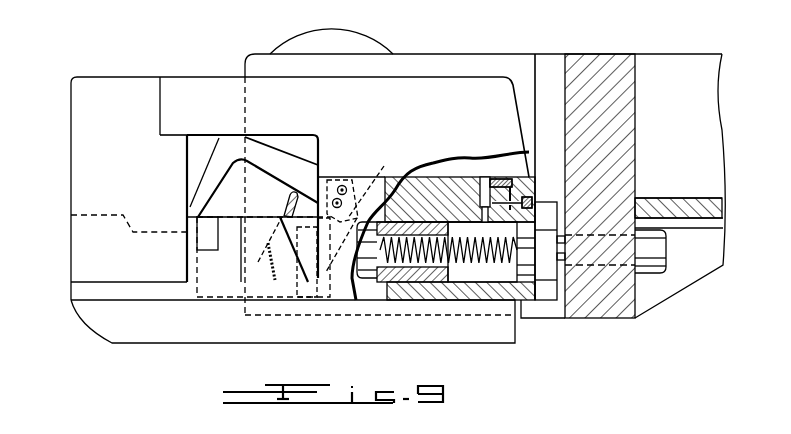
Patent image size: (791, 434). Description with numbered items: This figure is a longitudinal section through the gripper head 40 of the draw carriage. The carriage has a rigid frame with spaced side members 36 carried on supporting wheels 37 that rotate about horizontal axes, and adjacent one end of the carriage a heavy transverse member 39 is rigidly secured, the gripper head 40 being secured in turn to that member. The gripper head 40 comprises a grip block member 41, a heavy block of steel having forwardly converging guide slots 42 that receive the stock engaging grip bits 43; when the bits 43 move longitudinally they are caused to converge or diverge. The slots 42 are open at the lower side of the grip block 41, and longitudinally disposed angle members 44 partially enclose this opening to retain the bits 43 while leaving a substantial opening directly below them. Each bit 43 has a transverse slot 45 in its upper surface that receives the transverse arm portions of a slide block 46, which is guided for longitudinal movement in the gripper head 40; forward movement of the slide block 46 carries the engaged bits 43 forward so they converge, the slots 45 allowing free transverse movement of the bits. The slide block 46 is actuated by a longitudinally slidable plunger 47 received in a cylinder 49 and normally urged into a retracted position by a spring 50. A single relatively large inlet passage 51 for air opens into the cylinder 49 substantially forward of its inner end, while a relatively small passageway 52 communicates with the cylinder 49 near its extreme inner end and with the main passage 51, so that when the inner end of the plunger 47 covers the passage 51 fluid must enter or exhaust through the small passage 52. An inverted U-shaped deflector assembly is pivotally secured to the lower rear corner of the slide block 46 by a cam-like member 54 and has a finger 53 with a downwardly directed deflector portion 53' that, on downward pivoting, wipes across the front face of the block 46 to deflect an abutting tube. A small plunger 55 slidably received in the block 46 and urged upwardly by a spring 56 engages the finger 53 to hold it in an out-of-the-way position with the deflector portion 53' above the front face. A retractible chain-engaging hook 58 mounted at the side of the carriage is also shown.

The side member 36 is at (685, 58).
The supporting wheel 37 is at (357, 40).
The transverse member 39 is at (626, 119).
The gripper head 40 is at (398, 128).
The grip block member 41 is at (87, 157).
The guide slot 42 is at (87, 213).
The grip bit 43 is at (217, 272).
The angle member 44 is at (118, 328).
The transverse slot 45 is at (220, 233).
The slide block 46 is at (260, 262).
The plunger 47 is at (373, 270).
The cylinder 49 is at (486, 280).
The spring 50 is at (463, 238).
The inlet passage 51 is at (432, 197).
The passageway 52 is at (480, 160).
The finger 53 is at (252, 193).
The deflector portion 53' is at (205, 157).
The cam-like member 54 is at (384, 166).
The small plunger 55 is at (287, 200).
The spring 56 is at (278, 249).
The chain-engaging hook 58 is at (508, 177).